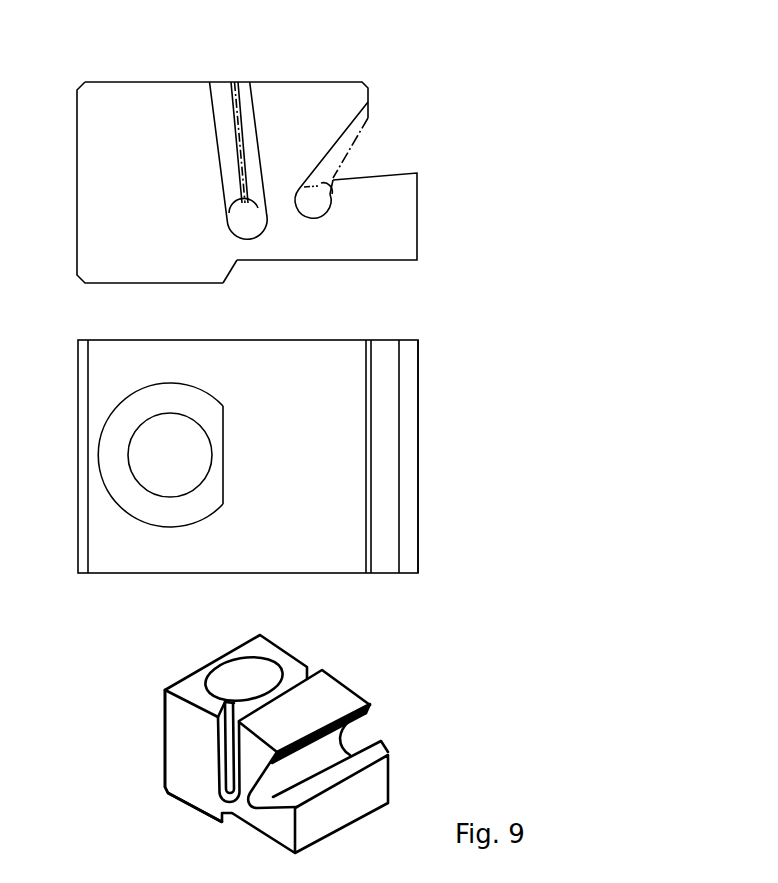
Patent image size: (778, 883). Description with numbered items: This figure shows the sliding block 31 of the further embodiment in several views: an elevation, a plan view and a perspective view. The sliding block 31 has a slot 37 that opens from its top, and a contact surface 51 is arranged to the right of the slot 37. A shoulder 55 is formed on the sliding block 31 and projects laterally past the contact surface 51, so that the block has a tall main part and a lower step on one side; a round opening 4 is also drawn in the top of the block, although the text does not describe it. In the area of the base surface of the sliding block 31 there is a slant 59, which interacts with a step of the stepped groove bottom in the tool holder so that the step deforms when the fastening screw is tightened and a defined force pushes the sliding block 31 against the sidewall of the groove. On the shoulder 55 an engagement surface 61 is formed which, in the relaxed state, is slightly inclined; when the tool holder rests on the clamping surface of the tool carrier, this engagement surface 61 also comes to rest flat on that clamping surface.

The hole 4 is at (232, 677).
The sliding block 31 is at (134, 750).
The slot 37 is at (220, 108).
The contact surface 51 is at (97, 190).
The shoulder 55 is at (403, 197).
The slant 59 is at (232, 273).
The engagement surface 61 is at (378, 172).